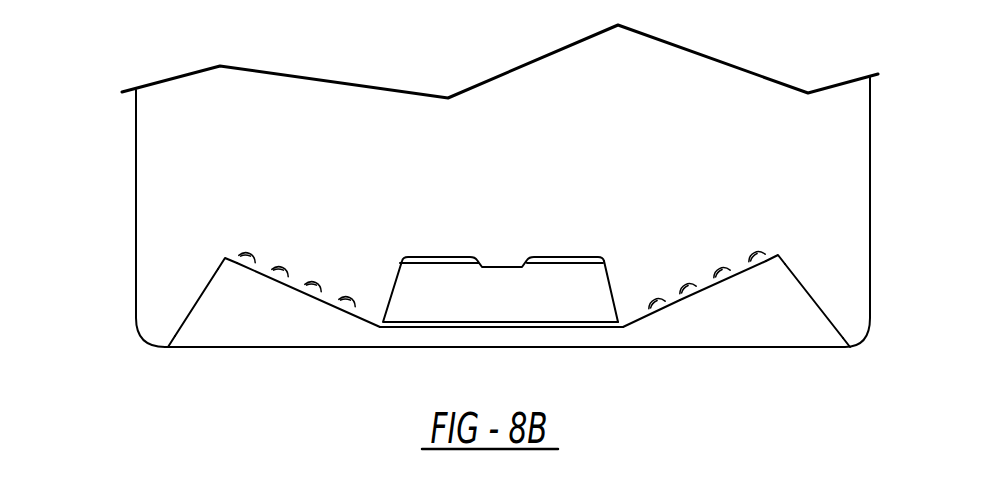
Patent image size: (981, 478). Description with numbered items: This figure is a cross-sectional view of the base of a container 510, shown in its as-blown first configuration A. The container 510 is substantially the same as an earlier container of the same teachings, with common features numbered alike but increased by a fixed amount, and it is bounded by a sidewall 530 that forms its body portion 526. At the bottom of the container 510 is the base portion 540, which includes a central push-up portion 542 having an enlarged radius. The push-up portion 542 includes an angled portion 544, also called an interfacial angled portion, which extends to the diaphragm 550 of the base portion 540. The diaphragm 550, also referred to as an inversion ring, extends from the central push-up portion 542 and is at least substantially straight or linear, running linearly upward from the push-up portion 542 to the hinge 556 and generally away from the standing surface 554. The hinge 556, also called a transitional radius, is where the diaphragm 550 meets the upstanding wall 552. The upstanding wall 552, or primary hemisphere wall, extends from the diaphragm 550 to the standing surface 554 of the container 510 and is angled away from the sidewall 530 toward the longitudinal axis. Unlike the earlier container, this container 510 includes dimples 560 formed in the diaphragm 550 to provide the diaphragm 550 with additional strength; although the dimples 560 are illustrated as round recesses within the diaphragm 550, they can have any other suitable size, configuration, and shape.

The container 510 is at (112, 118).
The sidewall 530 is at (135, 208).
The body portion 526 is at (135, 290).
The base portion 540 is at (482, 294).
The central push-up portion 542 is at (500, 263).
The angled portion 544 is at (612, 300).
The diaphragm 550 is at (328, 298).
The upstanding wall 552 is at (199, 302).
The standing surface 554 is at (166, 348).
The hinge 556 is at (225, 257).
The dimples 560 is at (288, 267).
The as-blown first configuration A is at (674, 303).